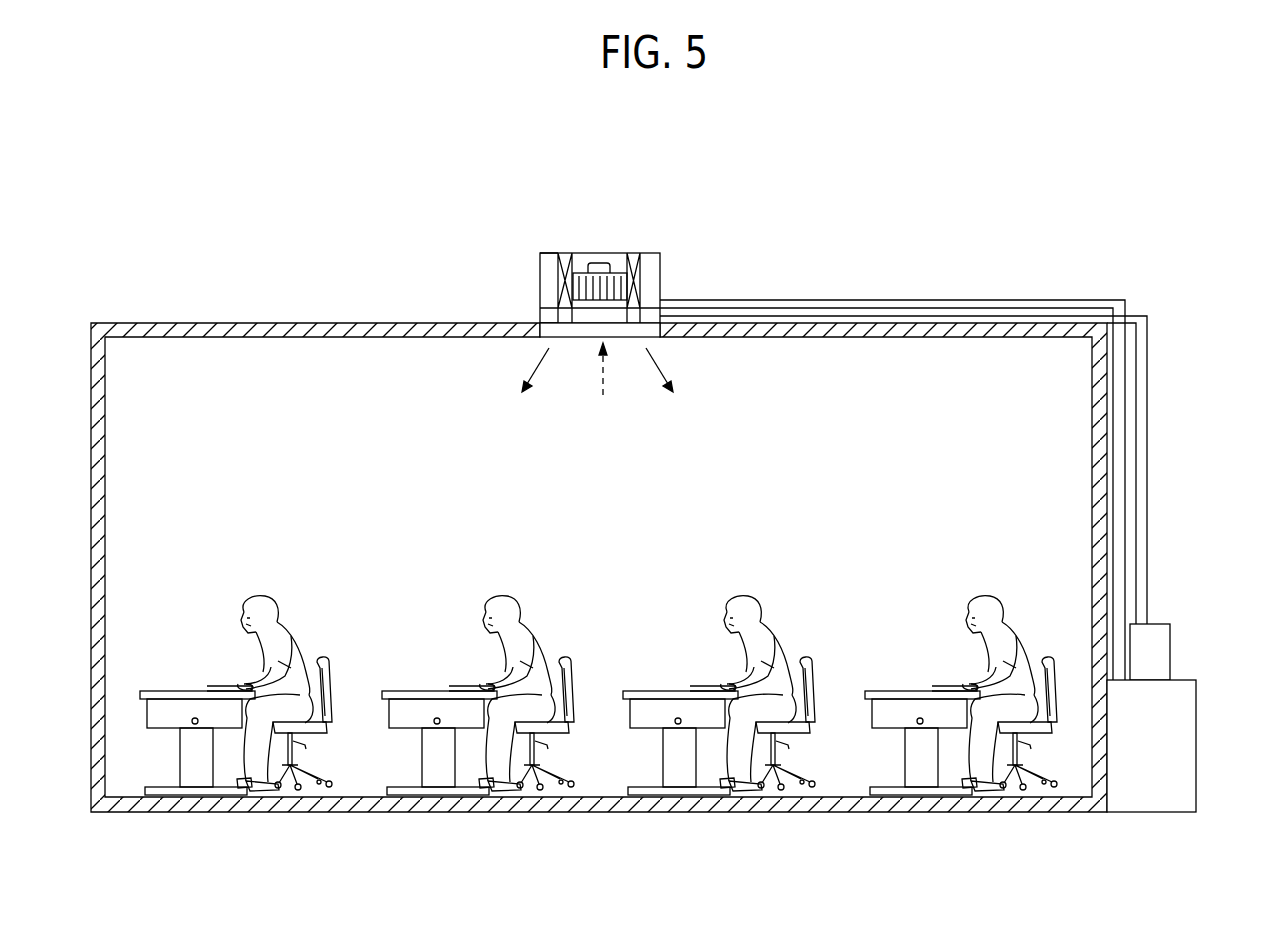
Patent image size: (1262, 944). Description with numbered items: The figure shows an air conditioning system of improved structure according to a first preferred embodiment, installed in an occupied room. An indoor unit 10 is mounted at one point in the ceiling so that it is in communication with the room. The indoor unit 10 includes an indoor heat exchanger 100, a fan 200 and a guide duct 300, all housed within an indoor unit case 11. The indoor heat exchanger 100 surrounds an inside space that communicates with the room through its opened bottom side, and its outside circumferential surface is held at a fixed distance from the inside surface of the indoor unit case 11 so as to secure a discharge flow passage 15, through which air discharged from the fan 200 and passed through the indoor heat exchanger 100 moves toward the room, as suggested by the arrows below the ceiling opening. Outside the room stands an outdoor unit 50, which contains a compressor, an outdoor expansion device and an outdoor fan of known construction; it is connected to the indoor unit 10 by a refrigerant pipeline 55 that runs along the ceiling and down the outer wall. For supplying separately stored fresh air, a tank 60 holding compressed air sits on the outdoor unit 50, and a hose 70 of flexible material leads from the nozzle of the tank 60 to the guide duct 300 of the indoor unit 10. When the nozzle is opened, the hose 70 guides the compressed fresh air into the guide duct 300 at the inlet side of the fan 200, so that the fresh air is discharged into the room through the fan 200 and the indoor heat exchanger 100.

The indoor unit 10 is at (592, 254).
The indoor unit case 11 is at (546, 268).
The discharge flow passage 15 is at (548, 292).
The indoor heat exchanger 100 is at (628, 282).
The fan 200 is at (628, 270).
The guide duct 300 is at (530, 315).
The refrigerant pipeline 55 is at (947, 300).
The hose 70 is at (1148, 480).
The tank 60 is at (1182, 646).
The outdoor unit 50 is at (1186, 752).